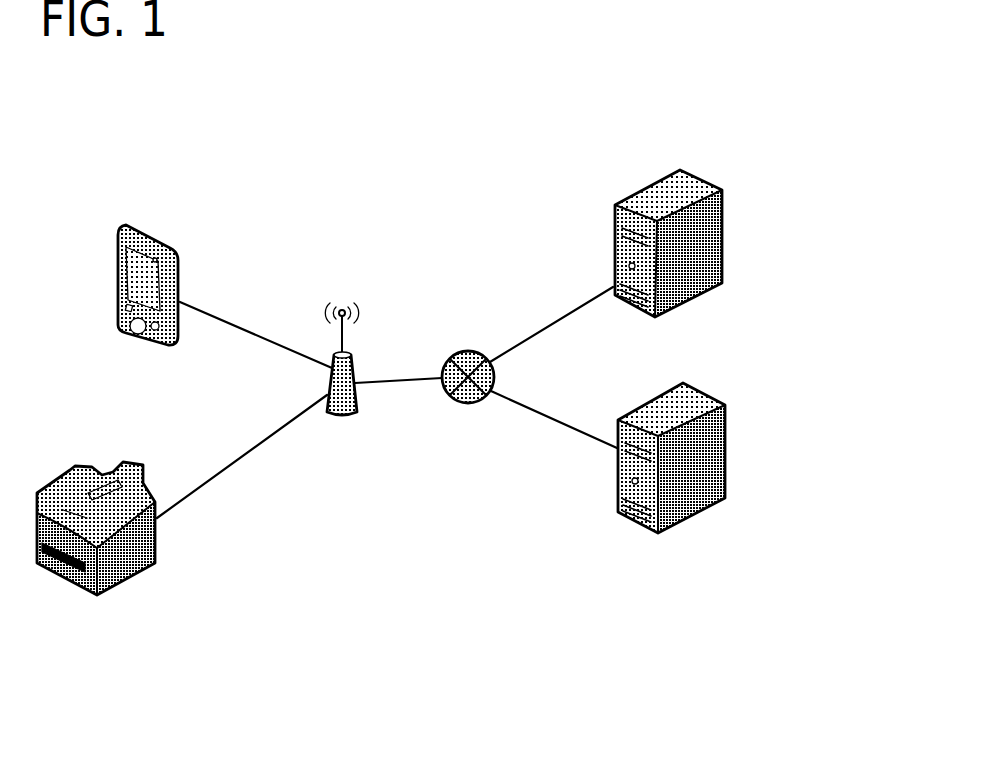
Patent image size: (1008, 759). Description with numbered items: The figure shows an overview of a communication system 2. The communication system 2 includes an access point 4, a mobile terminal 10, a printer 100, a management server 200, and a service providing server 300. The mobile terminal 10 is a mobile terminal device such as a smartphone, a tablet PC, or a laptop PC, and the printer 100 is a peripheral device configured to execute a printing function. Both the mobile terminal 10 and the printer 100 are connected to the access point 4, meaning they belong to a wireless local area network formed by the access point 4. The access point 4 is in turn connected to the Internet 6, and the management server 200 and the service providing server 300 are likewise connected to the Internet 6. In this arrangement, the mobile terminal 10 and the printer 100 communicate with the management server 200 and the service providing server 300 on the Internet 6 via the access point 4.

The communication system 2 is at (800, 112).
The access point 4 is at (355, 362).
The Internet 6 is at (465, 350).
The mobile terminal 10 is at (150, 233).
The printer 100 is at (137, 468).
The management server 200 is at (703, 178).
The service providing server 300 is at (707, 395).